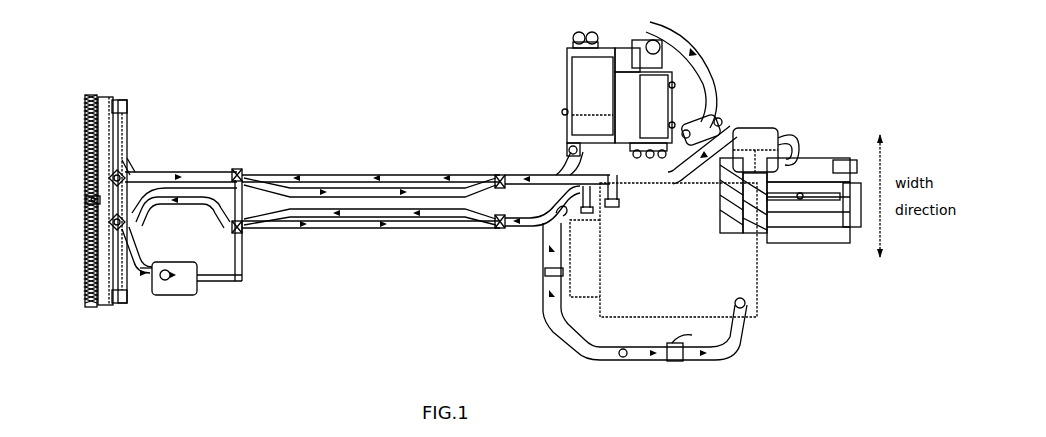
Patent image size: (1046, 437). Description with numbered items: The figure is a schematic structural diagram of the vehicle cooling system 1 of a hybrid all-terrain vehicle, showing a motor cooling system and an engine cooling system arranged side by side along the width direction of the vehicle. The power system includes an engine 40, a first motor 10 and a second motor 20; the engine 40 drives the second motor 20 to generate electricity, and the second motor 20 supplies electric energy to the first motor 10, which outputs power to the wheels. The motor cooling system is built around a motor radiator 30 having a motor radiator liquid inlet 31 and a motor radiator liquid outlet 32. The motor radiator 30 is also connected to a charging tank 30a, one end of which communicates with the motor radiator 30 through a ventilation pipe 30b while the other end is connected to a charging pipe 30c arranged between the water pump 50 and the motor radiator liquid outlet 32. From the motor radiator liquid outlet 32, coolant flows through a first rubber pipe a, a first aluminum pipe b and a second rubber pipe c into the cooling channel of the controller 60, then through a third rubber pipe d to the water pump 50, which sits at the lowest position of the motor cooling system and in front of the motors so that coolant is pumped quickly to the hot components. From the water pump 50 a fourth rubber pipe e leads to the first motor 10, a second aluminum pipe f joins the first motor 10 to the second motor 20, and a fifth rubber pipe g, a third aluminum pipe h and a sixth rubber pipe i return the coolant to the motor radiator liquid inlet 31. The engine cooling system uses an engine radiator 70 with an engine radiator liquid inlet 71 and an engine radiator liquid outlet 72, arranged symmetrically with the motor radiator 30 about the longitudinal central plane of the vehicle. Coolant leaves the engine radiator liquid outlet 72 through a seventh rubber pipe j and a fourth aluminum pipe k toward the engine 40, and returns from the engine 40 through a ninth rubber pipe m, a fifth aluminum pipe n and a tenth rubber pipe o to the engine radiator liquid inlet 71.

The cooling device 1 is at (605, 355).
The first motor 10 is at (812, 190).
The second motor 20 is at (583, 285).
The motor radiator 30 is at (88, 268).
The charging tank 30a is at (181, 285).
The ventilation pipe 30b is at (146, 283).
The charging pipe 30c is at (240, 172).
The motor radiator liquid inlet 31 is at (128, 282).
The motor radiator liquid outlet 32 is at (87, 203).
The engine 40 is at (722, 285).
The water pump 50 is at (714, 117).
The controller 60 is at (588, 95).
The engine radiator 70 is at (88, 128).
The engine radiator liquid inlet 71 is at (130, 177).
The engine radiator liquid outlet 72 is at (121, 157).
The first rubber pipe a is at (184, 177).
The first aluminum pipe b is at (308, 190).
The second rubber pipe c is at (540, 180).
The third rubber pipe d is at (708, 66).
The fourth rubber pipe e is at (745, 128).
The second aluminum pipe f is at (672, 176).
The fifth rubber pipe g is at (561, 213).
The third aluminum pipe h is at (393, 212).
The sixth rubber pipe i is at (182, 207).
The seventh rubber pipe j is at (203, 211).
The fourth aluminum pipe k is at (346, 226).
The ninth rubber pipe m is at (577, 165).
The fifth aluminum pipe n is at (416, 180).
The tenth rubber pipe o is at (128, 165).